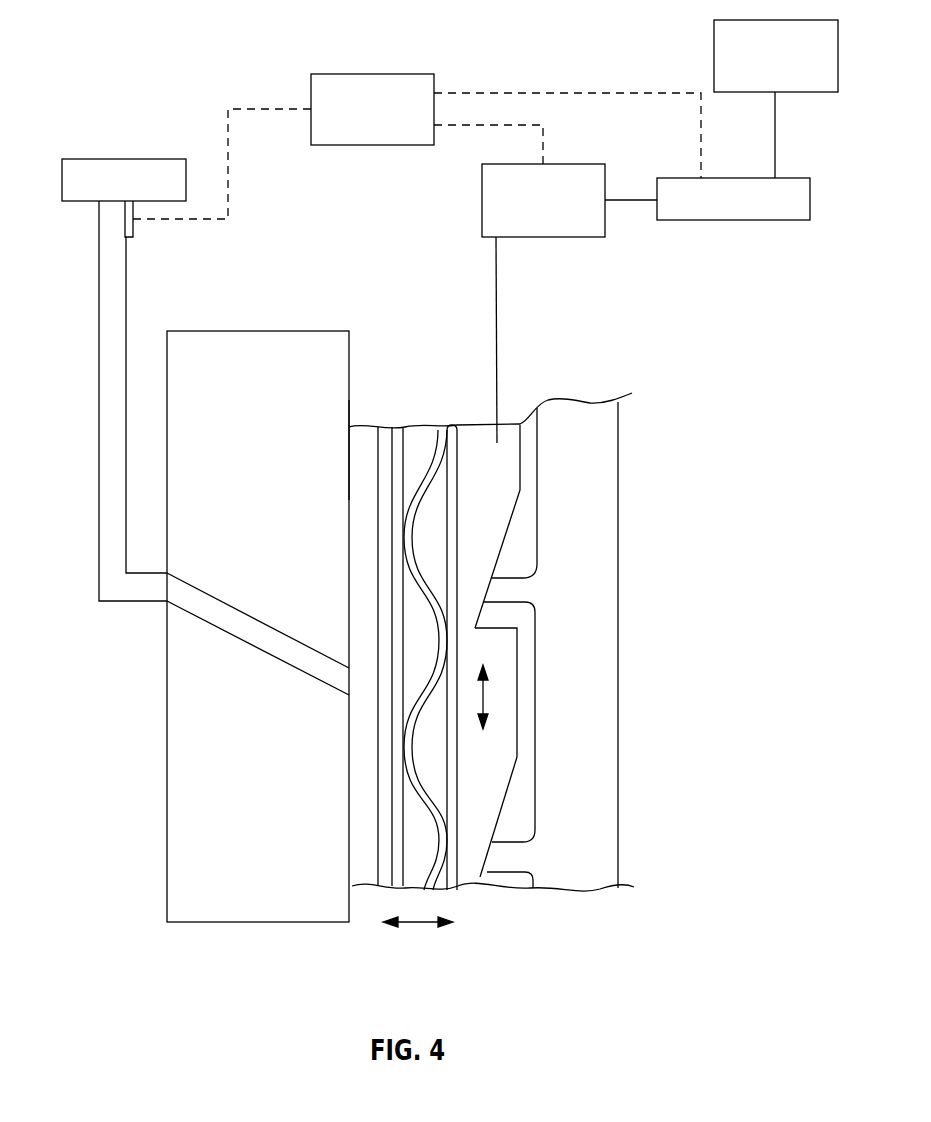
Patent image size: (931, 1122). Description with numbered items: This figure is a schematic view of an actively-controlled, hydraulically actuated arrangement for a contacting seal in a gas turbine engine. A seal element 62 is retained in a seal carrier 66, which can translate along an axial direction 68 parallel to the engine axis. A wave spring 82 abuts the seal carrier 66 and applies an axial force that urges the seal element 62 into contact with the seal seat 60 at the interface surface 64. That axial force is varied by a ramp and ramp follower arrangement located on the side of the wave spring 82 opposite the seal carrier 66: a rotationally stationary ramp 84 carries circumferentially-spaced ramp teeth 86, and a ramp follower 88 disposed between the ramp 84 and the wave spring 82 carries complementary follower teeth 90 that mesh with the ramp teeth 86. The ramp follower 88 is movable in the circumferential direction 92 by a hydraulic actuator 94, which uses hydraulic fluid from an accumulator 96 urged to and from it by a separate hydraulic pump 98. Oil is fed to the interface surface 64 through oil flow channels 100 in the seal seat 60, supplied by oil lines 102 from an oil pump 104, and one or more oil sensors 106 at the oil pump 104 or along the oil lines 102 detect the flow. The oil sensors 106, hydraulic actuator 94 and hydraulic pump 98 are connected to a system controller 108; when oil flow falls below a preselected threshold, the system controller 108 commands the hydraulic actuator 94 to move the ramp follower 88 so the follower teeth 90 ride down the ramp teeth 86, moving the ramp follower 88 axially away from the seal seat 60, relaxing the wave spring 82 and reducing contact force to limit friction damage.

The seal seat 60 is at (273, 789).
The seal element 62 is at (363, 430).
The interface surface 64 is at (348, 505).
The seal carrier 66 is at (395, 450).
The axial direction 68 is at (417, 927).
The wave spring 82 is at (433, 610).
The ramp 84 is at (610, 498).
The ramp teeth 86 is at (510, 592).
The ramp follower 88 is at (498, 752).
The follower teeth 90 is at (512, 512).
The circumferential direction 92 is at (487, 697).
The hydraulic actuator 94 is at (565, 238).
The accumulator 96 is at (733, 221).
The hydraulic pump 98 is at (714, 55).
The oil flow channels 100 is at (237, 618).
The oil lines 102 is at (112, 460).
The oil pump 104 is at (100, 158).
The oil sensors 106 is at (129, 238).
The system controller 108 is at (343, 73).